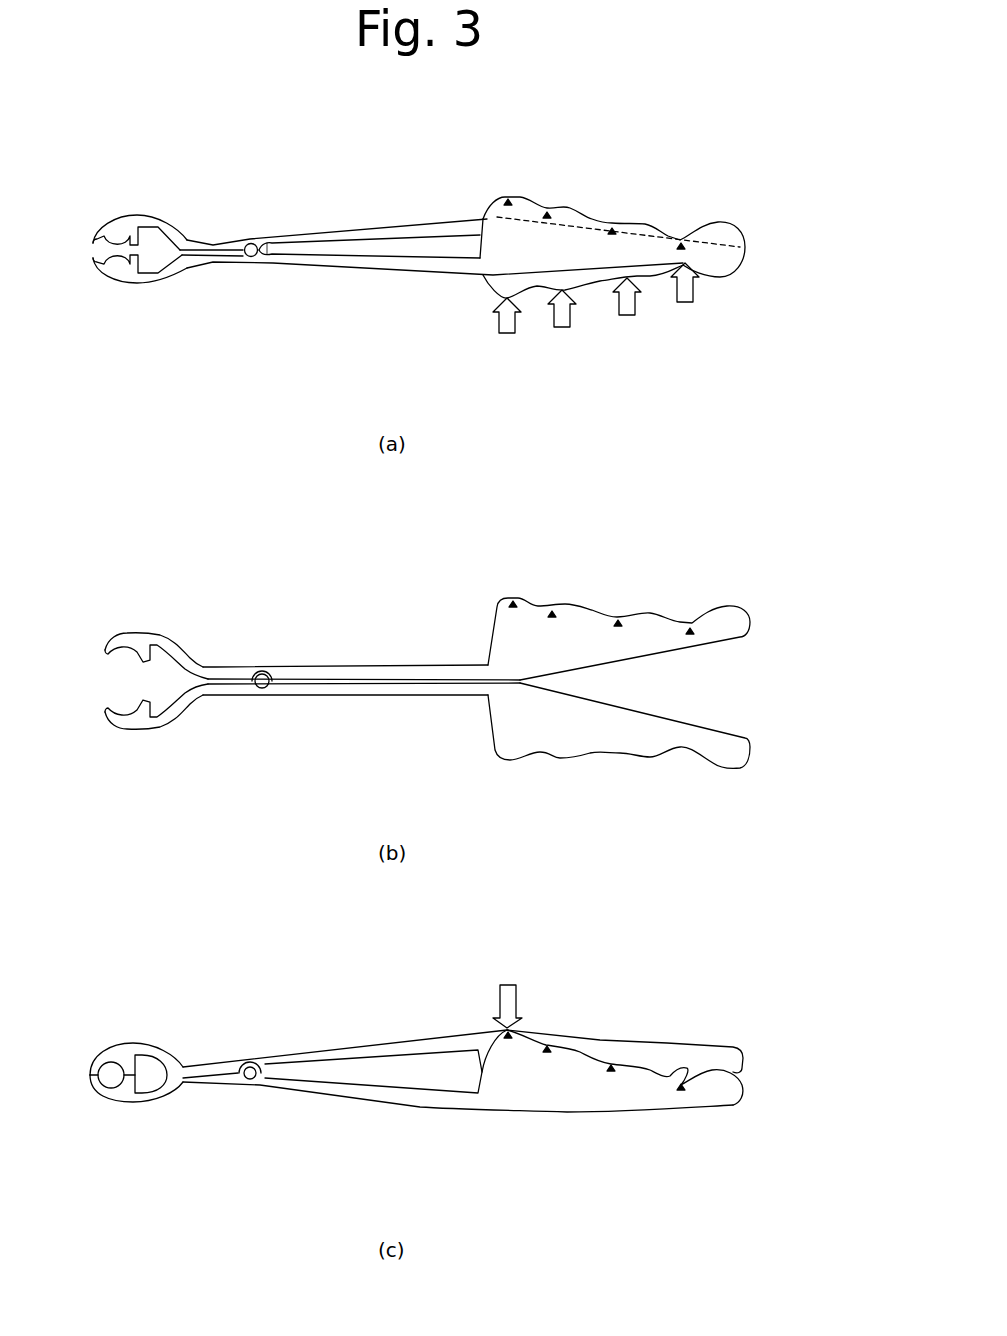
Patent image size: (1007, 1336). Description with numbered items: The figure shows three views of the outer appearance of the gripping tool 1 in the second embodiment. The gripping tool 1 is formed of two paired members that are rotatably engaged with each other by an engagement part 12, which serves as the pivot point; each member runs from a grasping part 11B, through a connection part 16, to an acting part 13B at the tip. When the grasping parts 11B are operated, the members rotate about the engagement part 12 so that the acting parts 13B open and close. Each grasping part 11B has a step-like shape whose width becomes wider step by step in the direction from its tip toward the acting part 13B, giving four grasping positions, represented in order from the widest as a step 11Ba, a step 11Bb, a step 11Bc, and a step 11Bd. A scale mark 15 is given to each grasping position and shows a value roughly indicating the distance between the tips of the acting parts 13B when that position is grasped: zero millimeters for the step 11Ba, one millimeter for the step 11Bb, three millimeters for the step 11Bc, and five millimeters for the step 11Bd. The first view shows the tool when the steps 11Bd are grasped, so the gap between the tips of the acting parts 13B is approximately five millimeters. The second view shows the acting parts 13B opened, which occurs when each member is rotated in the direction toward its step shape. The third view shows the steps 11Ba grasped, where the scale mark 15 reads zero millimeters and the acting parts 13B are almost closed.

The gripping tool 1 is at (68, 155).
The connection part 16 is at (475, 160).
The engagement part 12 is at (250, 257).
The acting part 13B is at (145, 275).
The scale mark 15 is at (565, 232).
The grasping part 11B is at (718, 225).
The step 11Ba is at (515, 663).
The step 11Bb is at (567, 321).
The step 11Bc is at (631, 310).
The step 11Bd is at (687, 296).